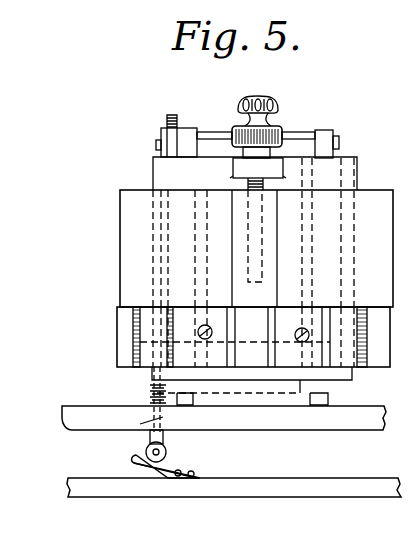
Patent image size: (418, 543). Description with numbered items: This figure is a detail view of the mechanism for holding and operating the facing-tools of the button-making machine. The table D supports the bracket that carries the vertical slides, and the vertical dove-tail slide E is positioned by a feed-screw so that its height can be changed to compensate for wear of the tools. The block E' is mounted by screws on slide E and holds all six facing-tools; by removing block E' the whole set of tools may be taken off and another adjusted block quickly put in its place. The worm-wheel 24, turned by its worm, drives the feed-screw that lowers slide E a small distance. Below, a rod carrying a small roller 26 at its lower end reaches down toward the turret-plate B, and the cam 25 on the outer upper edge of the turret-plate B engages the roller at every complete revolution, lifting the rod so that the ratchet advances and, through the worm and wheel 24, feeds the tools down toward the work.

The wheel 24 is at (285, 130).
The slide E is at (269, 211).
The block E' is at (207, 357).
The table D is at (80, 404).
The roller on rod 26 is at (143, 455).
The cam 25 is at (165, 465).
The turret-plate B is at (66, 484).